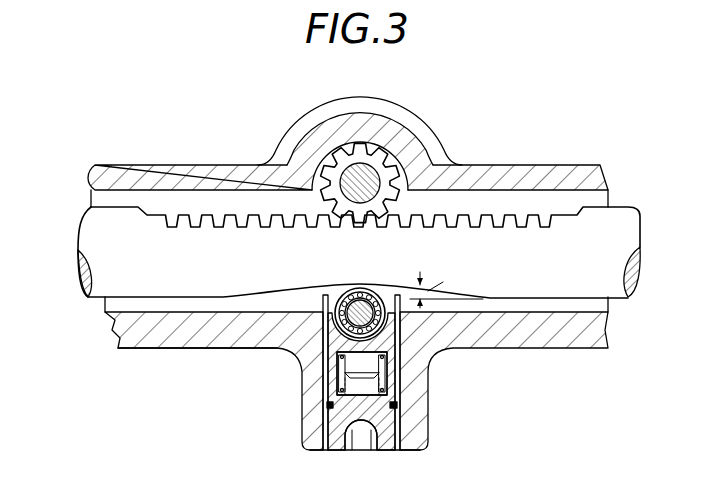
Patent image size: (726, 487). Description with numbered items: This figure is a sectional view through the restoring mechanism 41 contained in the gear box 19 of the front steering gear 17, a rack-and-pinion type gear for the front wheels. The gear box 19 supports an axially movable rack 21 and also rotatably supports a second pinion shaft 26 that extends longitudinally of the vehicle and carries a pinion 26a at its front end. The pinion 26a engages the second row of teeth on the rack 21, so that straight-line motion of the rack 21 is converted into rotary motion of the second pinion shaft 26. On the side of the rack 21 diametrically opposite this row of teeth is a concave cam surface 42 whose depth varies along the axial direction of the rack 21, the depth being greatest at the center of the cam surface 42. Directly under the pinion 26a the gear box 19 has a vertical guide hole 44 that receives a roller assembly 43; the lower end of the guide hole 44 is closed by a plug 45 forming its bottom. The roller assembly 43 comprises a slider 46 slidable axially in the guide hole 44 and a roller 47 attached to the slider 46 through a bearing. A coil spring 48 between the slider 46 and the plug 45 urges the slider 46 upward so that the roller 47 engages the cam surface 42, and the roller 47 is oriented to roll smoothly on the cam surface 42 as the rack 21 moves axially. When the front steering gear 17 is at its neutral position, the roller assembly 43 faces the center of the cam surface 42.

The front steering gear 17 is at (540, 130).
The gear box 19 is at (220, 178).
The second pinion shaft 26 is at (425, 142).
The pinion 26a is at (355, 168).
The rack 21 is at (602, 237).
The cam surface 42 is at (290, 292).
The restoring mechanism 41 is at (428, 333).
The roller assembly 43 is at (297, 328).
The slider 46 is at (310, 360).
The guide hole 44 is at (323, 394).
The roller 47 is at (360, 287).
The coil spring 48 is at (386, 385).
The plug 45 is at (337, 452).